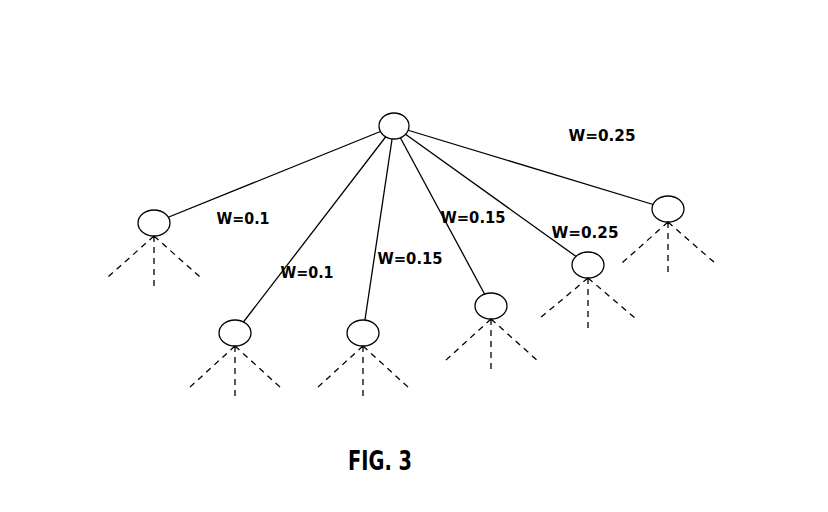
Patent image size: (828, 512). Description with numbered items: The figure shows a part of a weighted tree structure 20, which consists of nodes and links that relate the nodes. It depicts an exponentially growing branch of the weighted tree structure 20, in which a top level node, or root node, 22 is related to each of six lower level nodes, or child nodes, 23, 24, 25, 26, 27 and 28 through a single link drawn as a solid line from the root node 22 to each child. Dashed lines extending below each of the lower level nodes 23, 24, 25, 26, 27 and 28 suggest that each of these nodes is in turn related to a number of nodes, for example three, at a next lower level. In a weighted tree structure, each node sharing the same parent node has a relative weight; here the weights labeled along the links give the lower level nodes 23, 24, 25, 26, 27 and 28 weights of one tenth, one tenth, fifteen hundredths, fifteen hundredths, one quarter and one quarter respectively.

The weighted tree structure 20 is at (441, 104).
The top level node 22 is at (378, 124).
The lower level node 23 is at (138, 223).
The lower level node 24 is at (219, 333).
The lower level node 25 is at (347, 333).
The lower level node 26 is at (475, 306).
The lower level node 27 is at (572, 265).
The lower level node 28 is at (652, 209).